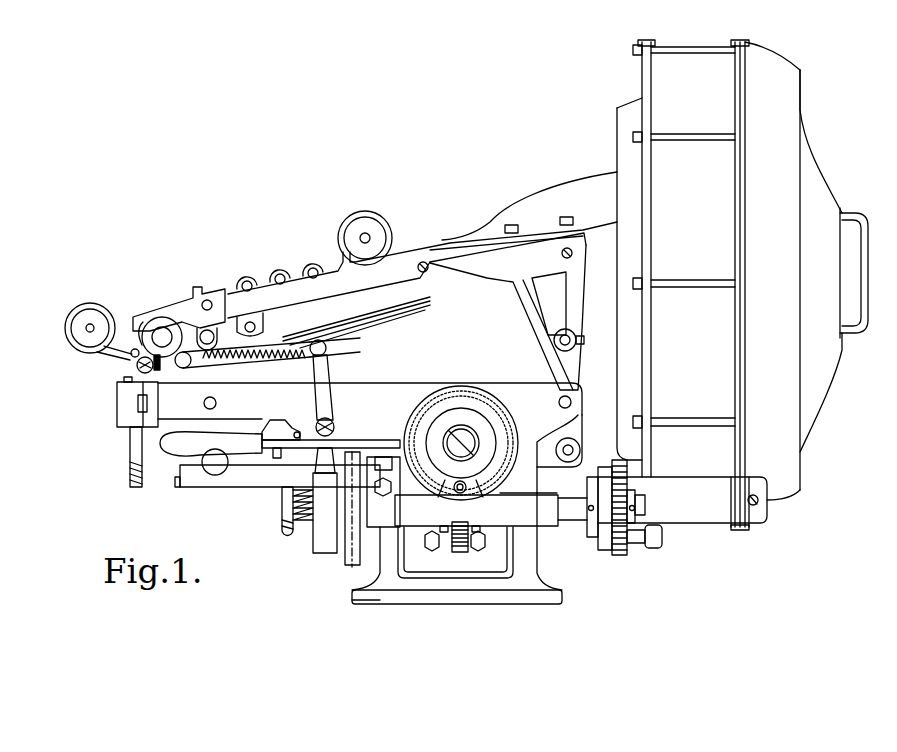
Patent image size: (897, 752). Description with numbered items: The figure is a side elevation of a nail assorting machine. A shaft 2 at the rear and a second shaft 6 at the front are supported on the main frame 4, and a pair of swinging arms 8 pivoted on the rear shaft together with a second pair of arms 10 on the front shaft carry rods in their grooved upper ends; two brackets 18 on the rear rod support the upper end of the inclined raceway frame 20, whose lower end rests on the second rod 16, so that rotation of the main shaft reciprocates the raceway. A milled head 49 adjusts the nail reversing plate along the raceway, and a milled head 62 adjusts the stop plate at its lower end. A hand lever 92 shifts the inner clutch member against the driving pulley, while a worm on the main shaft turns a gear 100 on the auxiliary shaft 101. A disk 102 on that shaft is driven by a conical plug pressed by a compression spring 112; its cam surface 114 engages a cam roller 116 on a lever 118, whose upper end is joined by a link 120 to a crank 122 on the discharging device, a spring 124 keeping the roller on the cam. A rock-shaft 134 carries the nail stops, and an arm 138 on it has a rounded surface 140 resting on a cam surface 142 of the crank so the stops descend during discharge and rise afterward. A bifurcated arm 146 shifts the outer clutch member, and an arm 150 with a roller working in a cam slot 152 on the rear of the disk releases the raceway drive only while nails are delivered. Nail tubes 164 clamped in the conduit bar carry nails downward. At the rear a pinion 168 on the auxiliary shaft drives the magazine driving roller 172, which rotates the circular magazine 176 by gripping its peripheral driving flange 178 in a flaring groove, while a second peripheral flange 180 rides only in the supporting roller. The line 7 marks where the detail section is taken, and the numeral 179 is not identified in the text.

The shaft 2 is at (575, 400).
The main frame 4 is at (395, 390).
The second shaft 6 is at (204, 403).
The section line 7— 7 is at (290, 507).
The swinging arms 8 is at (545, 368).
The second pair of arms 10 is at (202, 375).
The second rod 16 is at (207, 333).
The brackets 18 is at (570, 300).
The inclined raceway frame 20 is at (368, 275).
The milled head 49 is at (358, 228).
The milled head 62 is at (85, 313).
The hand lever 92 is at (303, 447).
The gear 100 is at (453, 550).
The auxiliary shaft 101 is at (570, 510).
The disk 102 is at (335, 535).
The compression spring 112 is at (287, 530).
The cam surface 114 is at (325, 522).
The cam roller 116 is at (323, 468).
The lever 118 is at (323, 395).
The link 120 is at (233, 363).
The crank 122 is at (132, 355).
The spring 124 is at (330, 360).
The rock-shaft 134 is at (207, 300).
The arm 138 is at (173, 305).
The rounded surface 140 is at (157, 317).
The cam surface 142 is at (145, 322).
The bifurcated arm 146 is at (480, 480).
The arm 150 is at (348, 550).
The cam slot 152 is at (350, 567).
The nail tubes 164 is at (137, 440).
The pinion 168 is at (620, 557).
The magazine driving roller 172 is at (690, 512).
The circular magazine 176 is at (706, 388).
The peripheral driving flange 178 is at (745, 450).
The screw 179 is at (750, 525).
The second peripheral flange 180 is at (645, 325).